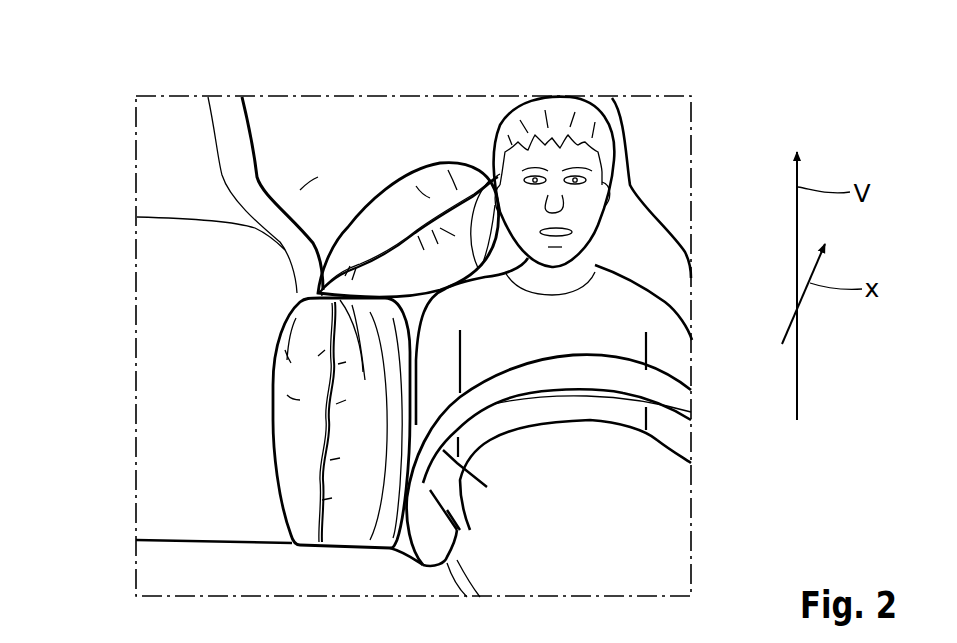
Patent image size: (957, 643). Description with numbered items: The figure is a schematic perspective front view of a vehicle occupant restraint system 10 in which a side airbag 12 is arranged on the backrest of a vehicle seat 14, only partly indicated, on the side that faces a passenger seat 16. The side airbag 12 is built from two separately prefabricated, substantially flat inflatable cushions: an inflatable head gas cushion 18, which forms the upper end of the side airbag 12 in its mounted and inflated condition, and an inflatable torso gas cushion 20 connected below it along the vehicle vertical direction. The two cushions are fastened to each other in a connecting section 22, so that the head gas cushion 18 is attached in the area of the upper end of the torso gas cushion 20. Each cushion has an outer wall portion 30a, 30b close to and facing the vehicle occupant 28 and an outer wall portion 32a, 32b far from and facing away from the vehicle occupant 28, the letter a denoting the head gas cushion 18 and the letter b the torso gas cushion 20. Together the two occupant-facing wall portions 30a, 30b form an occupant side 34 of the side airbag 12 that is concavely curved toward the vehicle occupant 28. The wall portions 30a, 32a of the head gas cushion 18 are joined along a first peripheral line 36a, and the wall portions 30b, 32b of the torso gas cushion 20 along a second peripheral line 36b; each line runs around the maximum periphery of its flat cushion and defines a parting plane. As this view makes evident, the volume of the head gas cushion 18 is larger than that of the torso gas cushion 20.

The vehicle occupant restraint system 10 is at (96, 70).
The side airbag 12 is at (331, 192).
The vehicle seat 14 is at (638, 216).
The passenger seat 16 is at (176, 282).
The head gas cushion 18 is at (453, 183).
The torso gas cushion 20 is at (290, 400).
The connecting section 22 is at (309, 298).
The vehicle occupant 28 is at (549, 100).
The outer wall portion close to the vehicle occupant 30a is at (490, 180).
The outer wall portion close to the vehicle occupant 30b is at (407, 442).
The outer wall portion far from the vehicle occupant 32a is at (422, 190).
The outer wall portion far from the vehicle occupant 32b is at (290, 356).
The occupant side 34 is at (425, 345).
The first peripheral line 36a is at (388, 250).
The second peripheral line 36b is at (335, 480).